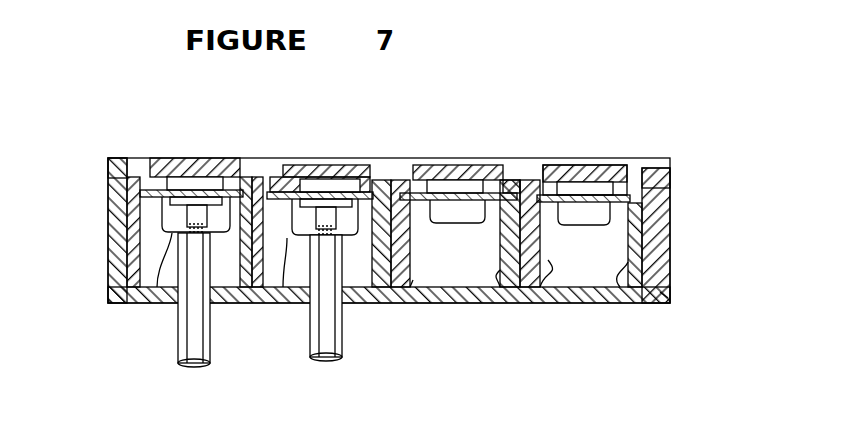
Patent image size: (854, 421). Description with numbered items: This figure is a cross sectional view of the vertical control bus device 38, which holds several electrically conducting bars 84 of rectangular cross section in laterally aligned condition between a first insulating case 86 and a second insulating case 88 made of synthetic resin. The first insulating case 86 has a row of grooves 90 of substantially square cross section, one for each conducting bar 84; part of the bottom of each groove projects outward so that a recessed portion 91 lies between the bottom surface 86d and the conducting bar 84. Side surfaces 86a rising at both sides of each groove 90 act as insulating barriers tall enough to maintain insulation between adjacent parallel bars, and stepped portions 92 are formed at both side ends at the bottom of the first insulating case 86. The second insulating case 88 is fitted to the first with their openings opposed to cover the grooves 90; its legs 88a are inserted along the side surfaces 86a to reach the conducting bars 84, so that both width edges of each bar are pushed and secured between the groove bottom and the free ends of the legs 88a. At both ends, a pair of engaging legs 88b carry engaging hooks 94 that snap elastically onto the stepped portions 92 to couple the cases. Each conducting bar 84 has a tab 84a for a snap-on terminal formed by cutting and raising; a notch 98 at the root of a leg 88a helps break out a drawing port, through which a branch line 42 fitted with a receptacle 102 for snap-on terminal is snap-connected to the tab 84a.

The vertical control bus device 38 is at (108, 236).
The branch line 42 is at (210, 340).
The conducting bar 84 is at (246, 158).
The tab for snap-on terminal 84a is at (452, 223).
The first insulating case 86 is at (570, 165).
The side surface 86a is at (517, 303).
The bottom surface 86d is at (425, 165).
The second insulating case 88 is at (582, 303).
The leg 88a is at (552, 287).
The engaging leg 88b is at (108, 270).
The groove 90 is at (355, 278).
The recessed portion 91 is at (337, 165).
The stepped portion 92 is at (152, 158).
The engaging hook 94 is at (134, 158).
The notch 98 is at (478, 303).
The receptacle for snap-on terminal 102 is at (147, 303).